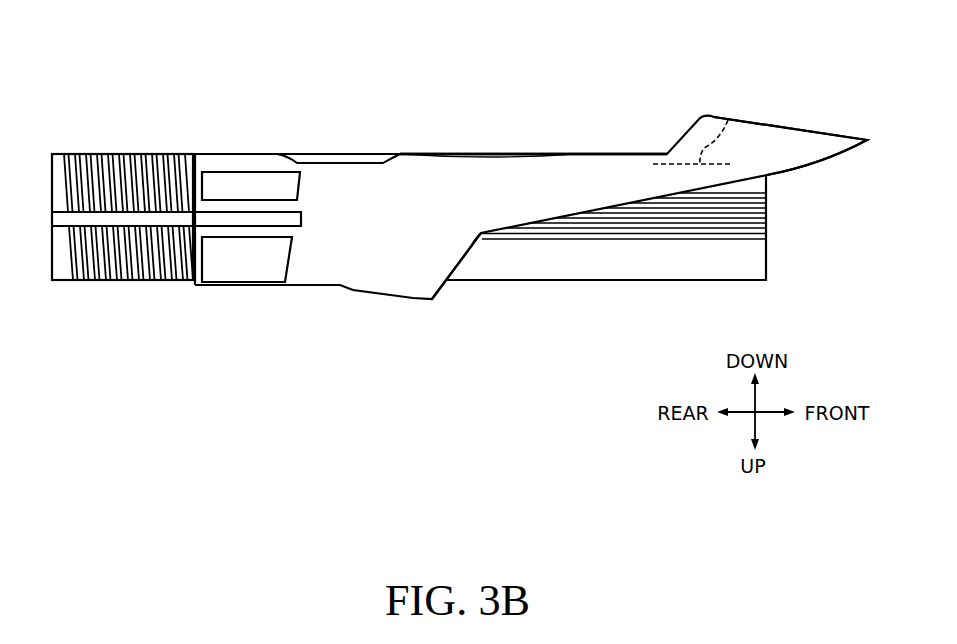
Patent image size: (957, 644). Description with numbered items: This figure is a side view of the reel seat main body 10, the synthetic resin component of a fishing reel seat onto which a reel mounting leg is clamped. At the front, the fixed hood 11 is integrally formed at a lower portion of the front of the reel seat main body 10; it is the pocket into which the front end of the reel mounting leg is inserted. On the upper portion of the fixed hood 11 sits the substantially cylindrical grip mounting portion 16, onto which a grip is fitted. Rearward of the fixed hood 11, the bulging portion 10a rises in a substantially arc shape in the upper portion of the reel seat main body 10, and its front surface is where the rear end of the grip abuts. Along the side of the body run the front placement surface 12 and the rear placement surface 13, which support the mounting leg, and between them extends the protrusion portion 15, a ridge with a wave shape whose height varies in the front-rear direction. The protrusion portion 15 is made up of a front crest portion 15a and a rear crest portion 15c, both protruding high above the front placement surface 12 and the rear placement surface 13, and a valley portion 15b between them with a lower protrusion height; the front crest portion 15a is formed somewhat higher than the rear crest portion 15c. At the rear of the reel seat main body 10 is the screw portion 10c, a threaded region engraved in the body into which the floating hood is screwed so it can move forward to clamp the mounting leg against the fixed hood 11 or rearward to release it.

The reel seat main body 10 is at (647, 91).
The bulging portion 10a is at (433, 263).
The screw portion 10c is at (113, 154).
The fixed hood 11 is at (762, 138).
The front placement surface 12 is at (728, 120).
The rear placement surface 13 is at (338, 163).
The protrusion portion 15 is at (615, 144).
The front crest portion 15a is at (597, 153).
The valley portion 15b is at (510, 154).
The rear crest portion 15c is at (422, 154).
The grip mounting portion 16 is at (690, 263).